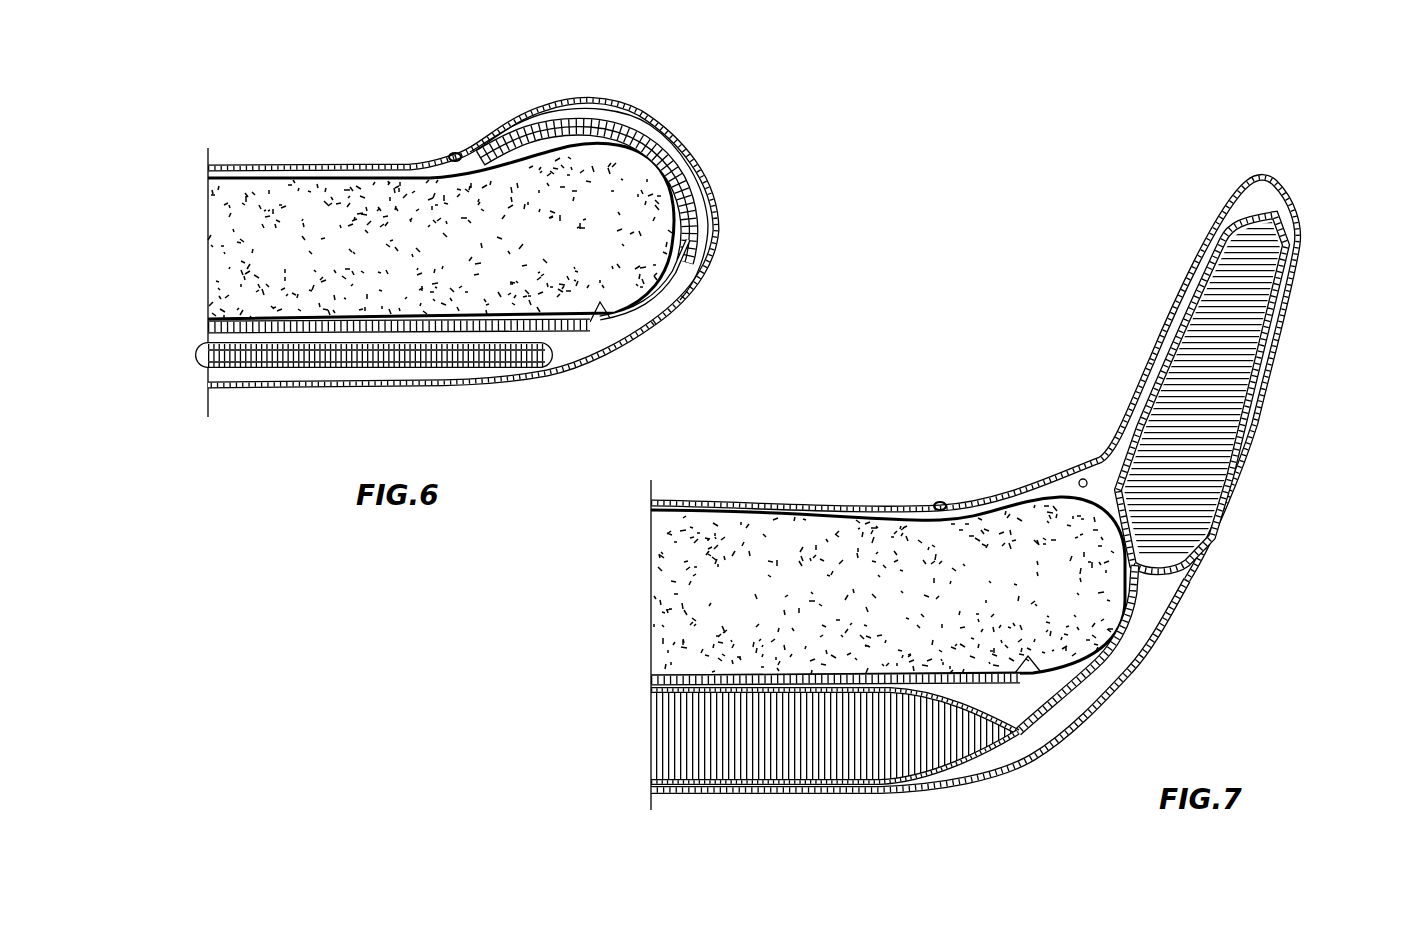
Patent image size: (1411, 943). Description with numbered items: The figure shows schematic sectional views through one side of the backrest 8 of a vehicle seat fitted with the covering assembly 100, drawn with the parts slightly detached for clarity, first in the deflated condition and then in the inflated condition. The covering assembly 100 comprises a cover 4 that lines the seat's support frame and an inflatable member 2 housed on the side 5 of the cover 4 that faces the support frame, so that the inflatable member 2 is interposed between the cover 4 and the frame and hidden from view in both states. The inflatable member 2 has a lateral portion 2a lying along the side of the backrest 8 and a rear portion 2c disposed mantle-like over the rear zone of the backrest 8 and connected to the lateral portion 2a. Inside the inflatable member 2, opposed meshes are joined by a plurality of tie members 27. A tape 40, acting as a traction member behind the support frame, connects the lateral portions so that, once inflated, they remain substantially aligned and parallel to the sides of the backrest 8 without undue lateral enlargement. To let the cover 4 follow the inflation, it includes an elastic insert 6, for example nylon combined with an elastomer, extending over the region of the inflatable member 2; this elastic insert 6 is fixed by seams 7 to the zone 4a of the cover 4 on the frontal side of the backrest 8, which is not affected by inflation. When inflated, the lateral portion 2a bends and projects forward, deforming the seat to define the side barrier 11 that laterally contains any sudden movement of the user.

In FIG. 6, the covering assembly 100 is at (186, 172).
In FIG. 7, the covering assembly 100 is at (738, 802).
In FIG. 6, the inflatable member 2 is at (283, 374).
In FIG. 7, the inflatable member 2 is at (636, 761).
In FIG. 6, the lateral portion 2a is at (679, 157).
In FIG. 7, the lateral portion 2a is at (1288, 250).
In FIG. 6, the rear portion 2c is at (206, 357).
In FIG. 7, the rear portion 2c is at (652, 690).
In FIG. 6, the cover 4 is at (500, 113).
In FIG. 7, the cover 4 is at (1012, 476).
In FIG. 6, the zone of the cover 4a is at (327, 163).
In FIG. 7, the zone of the cover 4a is at (737, 499).
In FIG. 6, the side of the cover 5 is at (578, 97).
In FIG. 7, the side of the cover 5 is at (1080, 480).
In FIG. 6, the elastic insert 6 is at (540, 385).
In FIG. 7, the elastic insert 6 is at (942, 780).
In FIG. 6, the seam 7 is at (450, 154).
In FIG. 7, the seam 7 is at (940, 500).
In FIG. 6, the backrest 8 is at (253, 203).
In FIG. 7, the backrest 8 is at (710, 607).
In FIG. 7, the side barrier 11 is at (1299, 196).
In FIG. 7, the tie members 27 is at (1200, 490).
In FIG. 6, the tape 40 is at (633, 309).
In FIG. 7, the tape 40 is at (1103, 663).